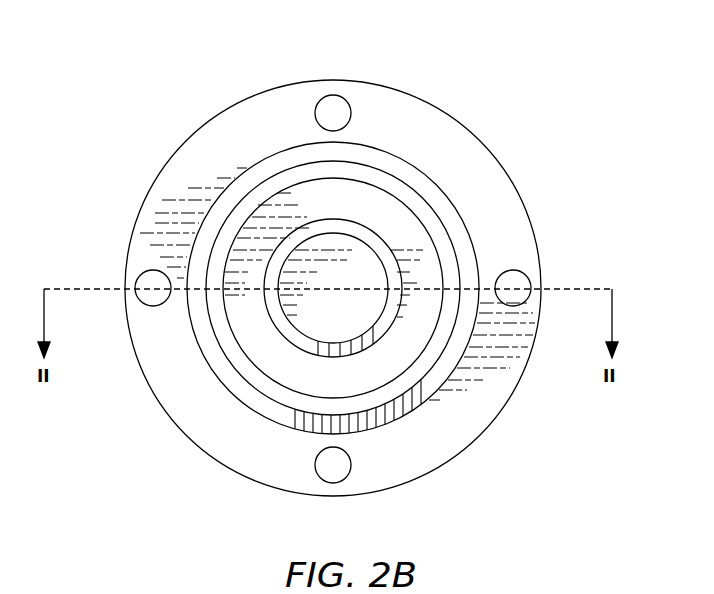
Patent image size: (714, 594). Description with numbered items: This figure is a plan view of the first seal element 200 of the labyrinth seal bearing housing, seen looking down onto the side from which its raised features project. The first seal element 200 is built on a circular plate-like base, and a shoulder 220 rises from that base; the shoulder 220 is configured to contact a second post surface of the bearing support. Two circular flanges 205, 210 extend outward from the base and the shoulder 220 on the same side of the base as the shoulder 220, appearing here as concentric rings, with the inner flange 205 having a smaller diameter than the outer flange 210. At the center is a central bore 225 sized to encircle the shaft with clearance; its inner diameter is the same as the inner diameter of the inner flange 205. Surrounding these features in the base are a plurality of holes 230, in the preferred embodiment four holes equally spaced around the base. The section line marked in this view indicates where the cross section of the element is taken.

The first seal element 200 is at (153, 78).
The flange 205 is at (392, 248).
The flange 210 is at (390, 183).
The shoulder 220 is at (470, 253).
The central bore 225 is at (372, 338).
The holes 230 is at (333, 95).